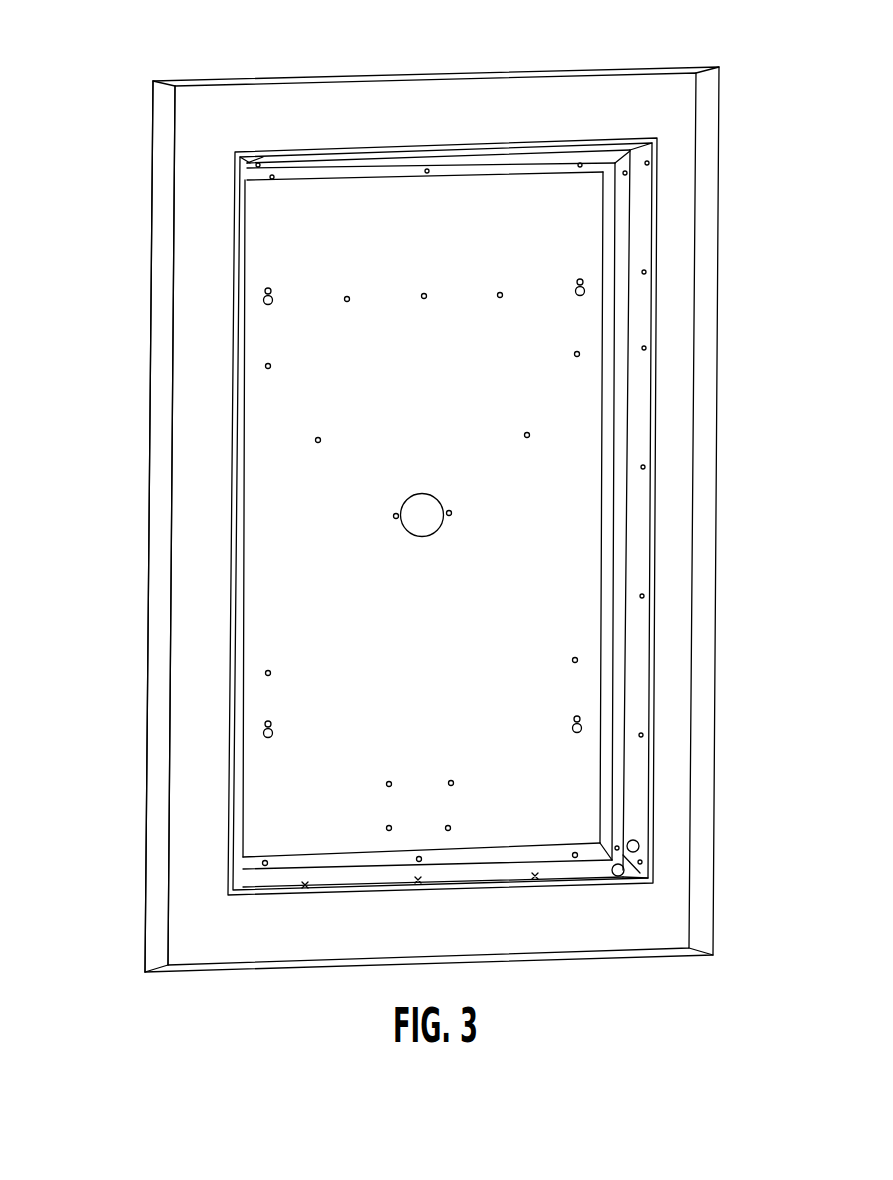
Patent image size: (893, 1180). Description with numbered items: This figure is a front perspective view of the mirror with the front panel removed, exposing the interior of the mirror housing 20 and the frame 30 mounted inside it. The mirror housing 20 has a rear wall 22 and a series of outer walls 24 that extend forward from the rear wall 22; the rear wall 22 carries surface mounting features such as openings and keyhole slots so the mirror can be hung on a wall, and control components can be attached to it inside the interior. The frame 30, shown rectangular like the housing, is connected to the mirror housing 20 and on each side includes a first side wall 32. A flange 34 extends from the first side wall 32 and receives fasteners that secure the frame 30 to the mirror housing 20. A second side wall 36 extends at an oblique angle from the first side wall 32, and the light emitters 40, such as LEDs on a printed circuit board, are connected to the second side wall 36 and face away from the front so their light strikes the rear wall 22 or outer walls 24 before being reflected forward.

The mirror housing 20 is at (138, 642).
The rear wall 22 is at (192, 180).
The outer walls 24 is at (157, 520).
The frame 30 is at (655, 293).
The first side wall 32 is at (622, 703).
The flange 34 is at (607, 827).
The second side wall 36 is at (640, 572).
The light emitters 40 is at (501, 144).